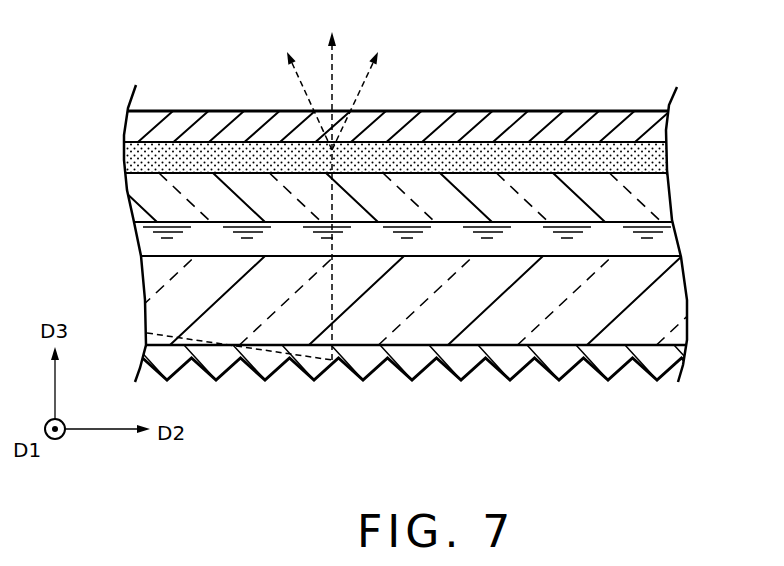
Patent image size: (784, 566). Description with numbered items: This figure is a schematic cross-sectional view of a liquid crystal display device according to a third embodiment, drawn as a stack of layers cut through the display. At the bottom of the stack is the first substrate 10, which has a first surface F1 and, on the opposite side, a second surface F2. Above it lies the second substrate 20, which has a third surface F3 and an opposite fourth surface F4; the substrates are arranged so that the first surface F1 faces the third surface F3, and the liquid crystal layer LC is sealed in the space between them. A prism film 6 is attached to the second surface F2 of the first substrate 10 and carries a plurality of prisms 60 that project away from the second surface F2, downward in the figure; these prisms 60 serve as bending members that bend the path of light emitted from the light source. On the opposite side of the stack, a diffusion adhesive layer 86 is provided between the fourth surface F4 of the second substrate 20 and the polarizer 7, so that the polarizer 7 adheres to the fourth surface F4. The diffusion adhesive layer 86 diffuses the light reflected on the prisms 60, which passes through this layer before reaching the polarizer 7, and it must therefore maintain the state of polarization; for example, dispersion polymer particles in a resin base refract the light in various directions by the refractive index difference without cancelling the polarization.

The polarizer 7 is at (637, 125).
The diffusion adhesive layer 86 is at (653, 157).
The second substrate 20 is at (658, 200).
The liquid crystal layer LC is at (668, 238).
The first substrate 10 is at (668, 303).
The prism film 6 is at (434, 408).
The prisms 60 is at (495, 368).
The first surface F1 is at (584, 248).
The second surface F2 is at (556, 354).
The third surface F3 is at (526, 235).
The fourth surface F4 is at (554, 160).